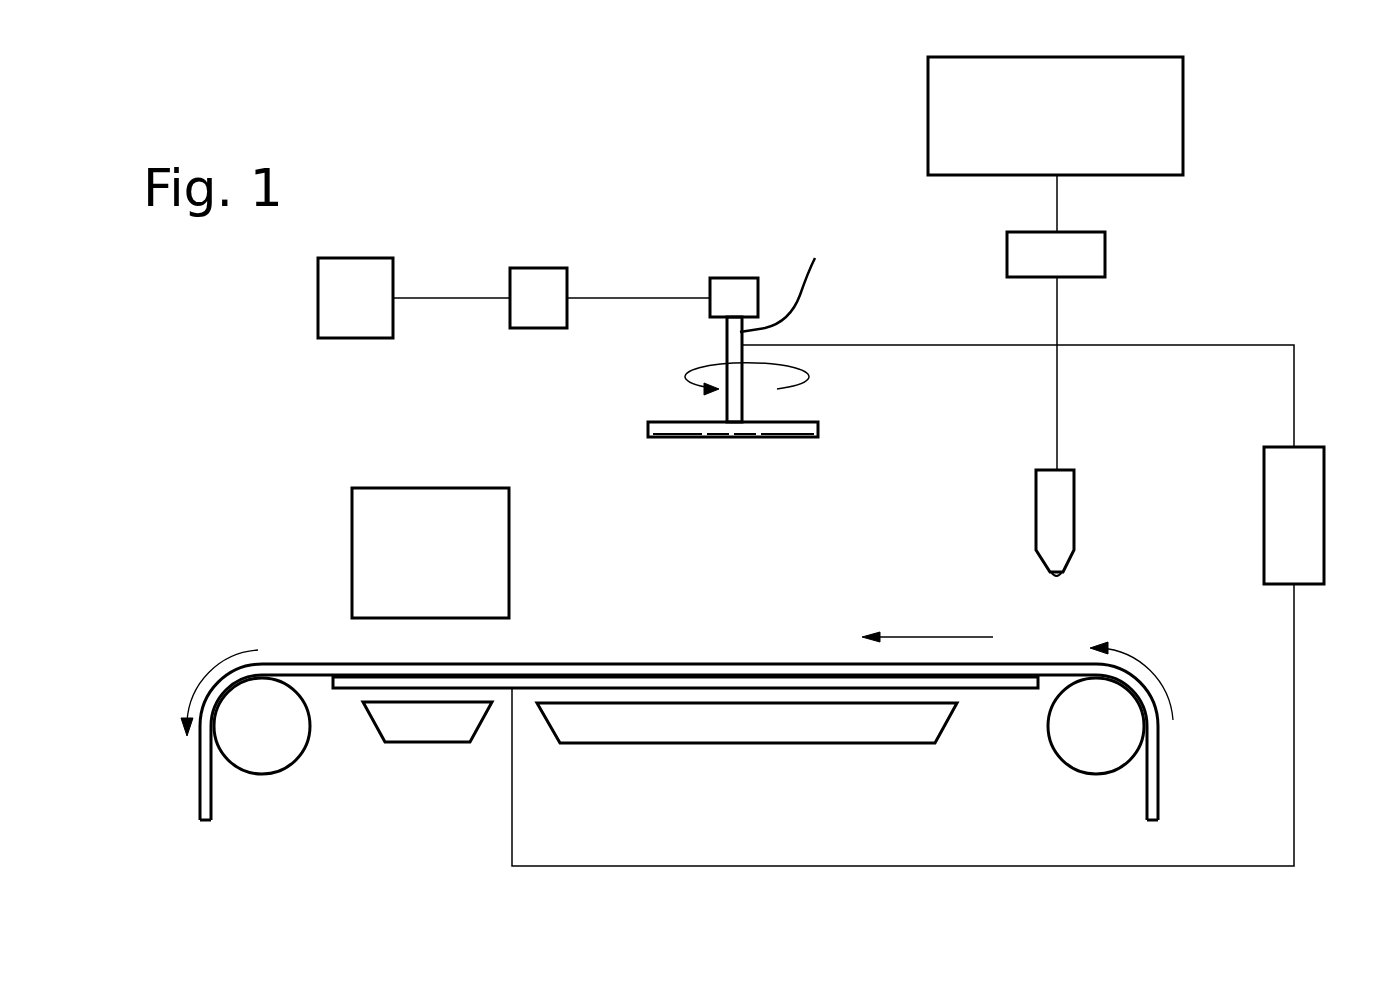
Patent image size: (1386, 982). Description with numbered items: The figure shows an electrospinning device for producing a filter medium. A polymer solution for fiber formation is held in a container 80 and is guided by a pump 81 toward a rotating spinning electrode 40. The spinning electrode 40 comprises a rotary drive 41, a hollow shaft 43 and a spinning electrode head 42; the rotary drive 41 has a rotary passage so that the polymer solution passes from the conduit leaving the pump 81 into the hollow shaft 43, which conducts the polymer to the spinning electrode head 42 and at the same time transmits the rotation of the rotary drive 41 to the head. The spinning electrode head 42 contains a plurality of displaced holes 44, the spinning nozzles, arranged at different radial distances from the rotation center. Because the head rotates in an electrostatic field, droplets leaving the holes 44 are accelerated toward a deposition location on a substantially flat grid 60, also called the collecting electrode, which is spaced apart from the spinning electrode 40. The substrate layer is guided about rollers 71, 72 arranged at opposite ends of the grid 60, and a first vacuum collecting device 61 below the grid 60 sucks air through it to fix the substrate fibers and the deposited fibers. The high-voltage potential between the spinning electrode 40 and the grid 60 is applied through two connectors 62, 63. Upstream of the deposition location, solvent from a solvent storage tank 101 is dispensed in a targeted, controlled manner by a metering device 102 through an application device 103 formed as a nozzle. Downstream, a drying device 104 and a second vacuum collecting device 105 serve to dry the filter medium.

The spinning electrode 40 is at (634, 371).
The rotary drive 41 is at (730, 287).
The spinning electrode head 42 is at (648, 425).
The hollow shaft 43 is at (784, 273).
The holes 44 is at (682, 443).
The grid 60 is at (1012, 690).
The first vacuum collecting device 61 is at (653, 743).
The connector 62 is at (1168, 337).
The connector 63 is at (1287, 712).
The roller 71 is at (1096, 726).
The roller 72 is at (262, 726).
The container 80 is at (355, 298).
The pump 81 is at (538, 298).
The solvent storage tank 101 is at (1186, 130).
The metering device 102 is at (1107, 258).
The application device 103 is at (1076, 513).
The drying device 104 is at (352, 549).
The second vacuum collecting device 105 is at (445, 742).